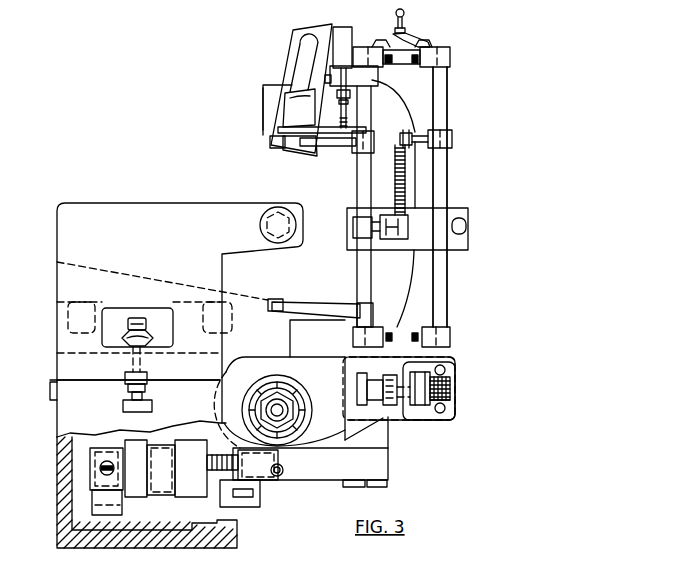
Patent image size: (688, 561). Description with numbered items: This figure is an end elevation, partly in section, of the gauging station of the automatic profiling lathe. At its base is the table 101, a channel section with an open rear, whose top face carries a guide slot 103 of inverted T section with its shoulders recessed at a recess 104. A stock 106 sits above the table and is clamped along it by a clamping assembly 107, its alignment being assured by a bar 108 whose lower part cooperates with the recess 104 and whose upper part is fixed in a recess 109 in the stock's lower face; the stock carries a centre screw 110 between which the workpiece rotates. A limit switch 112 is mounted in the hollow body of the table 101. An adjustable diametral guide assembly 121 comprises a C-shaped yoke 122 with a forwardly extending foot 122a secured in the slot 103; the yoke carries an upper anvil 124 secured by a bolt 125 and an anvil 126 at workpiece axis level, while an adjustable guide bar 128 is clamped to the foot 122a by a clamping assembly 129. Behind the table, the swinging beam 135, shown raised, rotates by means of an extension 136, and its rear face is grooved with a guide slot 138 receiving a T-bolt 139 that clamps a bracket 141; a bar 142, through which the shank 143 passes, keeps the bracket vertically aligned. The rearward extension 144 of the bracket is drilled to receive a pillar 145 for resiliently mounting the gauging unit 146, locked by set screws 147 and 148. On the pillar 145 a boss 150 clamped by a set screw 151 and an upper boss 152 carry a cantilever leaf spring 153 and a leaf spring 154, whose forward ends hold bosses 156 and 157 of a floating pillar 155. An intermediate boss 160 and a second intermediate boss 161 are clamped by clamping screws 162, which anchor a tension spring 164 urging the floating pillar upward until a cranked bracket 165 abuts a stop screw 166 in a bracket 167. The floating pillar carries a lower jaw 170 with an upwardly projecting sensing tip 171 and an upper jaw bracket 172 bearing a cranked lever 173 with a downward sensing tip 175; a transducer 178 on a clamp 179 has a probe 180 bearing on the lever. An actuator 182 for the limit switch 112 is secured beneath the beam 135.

The table 101 is at (58, 468).
The guide slot 103 is at (124, 410).
The recess 104 is at (131, 396).
The stock 106 is at (120, 203).
The clamping assembly 107 is at (152, 312).
The bar 108 is at (147, 388).
The recess 109 is at (148, 378).
The centre screw 110 is at (278, 243).
The limit switch 112 is at (186, 477).
The adjustable diametral guide assembly 121 is at (254, 96).
The C-shaped yoke 122 is at (264, 112).
The foot 122a is at (138, 372).
The upper anvil 124 is at (292, 149).
The bolt 125 is at (293, 106).
The anvil 126 is at (348, 237).
The adjustable guide bar 128 is at (150, 271).
The clamping assembly 129 is at (236, 316).
The swinging beam 135 is at (348, 366).
The extension 136 is at (328, 436).
The guide slot 138 is at (342, 388).
The T-bolt 139 is at (377, 405).
The bracket 141 is at (402, 406).
The bar 142 is at (392, 406).
The shank 143 is at (452, 388).
The rearward extension 144 is at (452, 397).
The pillar 145 is at (446, 277).
The gauging unit 146 is at (452, 102).
The set screw 147 is at (446, 370).
The set screw 148 is at (446, 410).
The boss 150 is at (440, 338).
The set screw 151 is at (426, 328).
The upper boss 152 is at (450, 60).
The cantilever leaf spring 153 is at (383, 336).
The leaf spring 154 is at (437, 44).
The floating pillar 155 is at (356, 184).
The boss 156 is at (372, 320).
The boss 157 is at (387, 67).
The intermediate boss 160 is at (452, 140).
The second intermediate boss 161 is at (354, 226).
The clamping screw 162 is at (406, 132).
The tension spring 164 is at (408, 183).
The cranked bracket 165 is at (386, 40).
The stop screw 166 is at (404, 12).
The bracket 167 is at (415, 37).
The lower jaw 170 is at (317, 303).
The sensing tip 171 is at (270, 302).
The upper jaw bracket 172 is at (338, 147).
The cranked lever 173 is at (284, 130).
The sensing tip 175 is at (271, 146).
The transducer 178 is at (338, 27).
The clamp 179 is at (372, 87).
The probe 180 is at (344, 110).
The actuator 182 is at (330, 482).